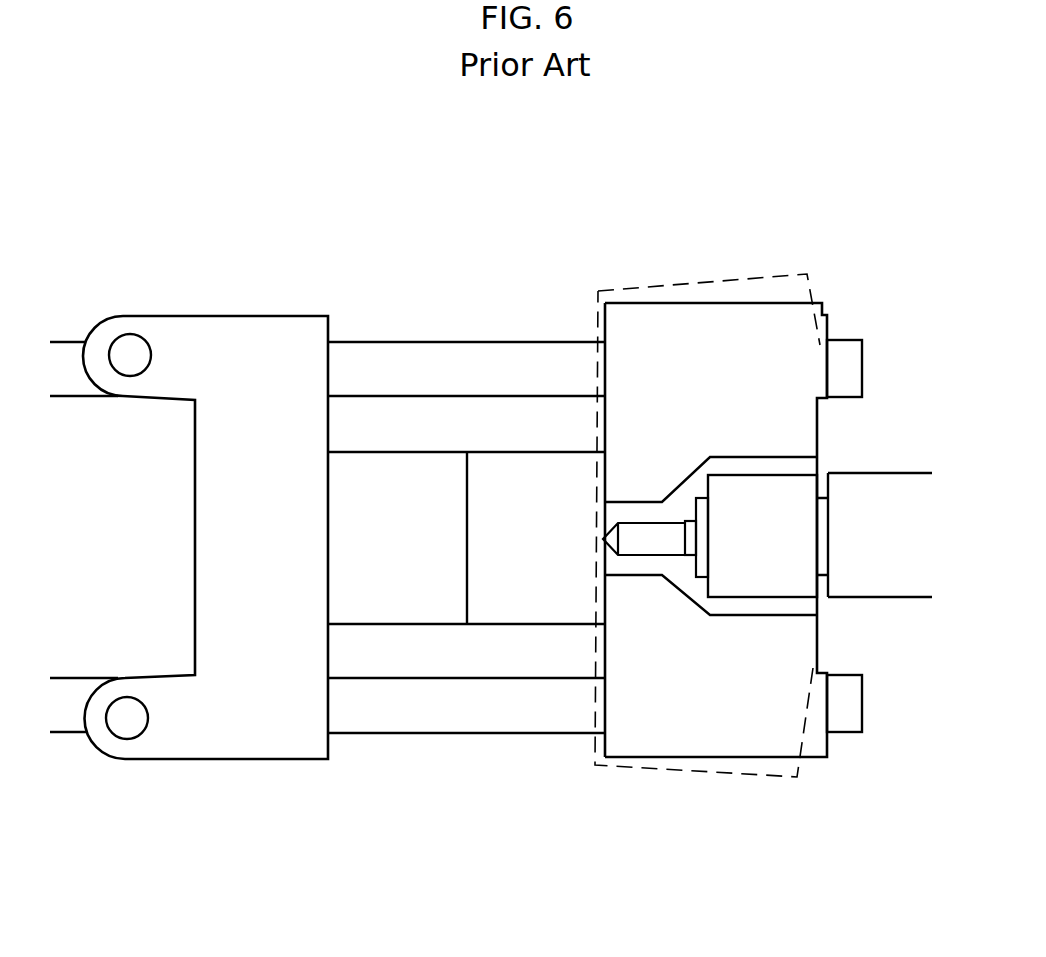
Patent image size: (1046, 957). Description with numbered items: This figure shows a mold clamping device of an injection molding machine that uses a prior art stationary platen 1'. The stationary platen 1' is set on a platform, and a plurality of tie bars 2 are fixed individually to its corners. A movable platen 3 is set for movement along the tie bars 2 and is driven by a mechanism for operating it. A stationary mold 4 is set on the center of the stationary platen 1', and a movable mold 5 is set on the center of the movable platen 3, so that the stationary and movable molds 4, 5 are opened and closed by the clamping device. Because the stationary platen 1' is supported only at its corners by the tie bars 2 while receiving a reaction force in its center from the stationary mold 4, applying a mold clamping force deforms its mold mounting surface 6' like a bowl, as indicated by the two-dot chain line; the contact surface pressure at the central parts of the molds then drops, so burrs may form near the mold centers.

The stationary platen 1' is at (763, 477).
The tie bars 2 is at (406, 370).
The movable platen 3 is at (227, 359).
The stationary mold 4 is at (552, 609).
The movable mold 5 is at (407, 597).
The mold mounting surface 6' is at (583, 609).